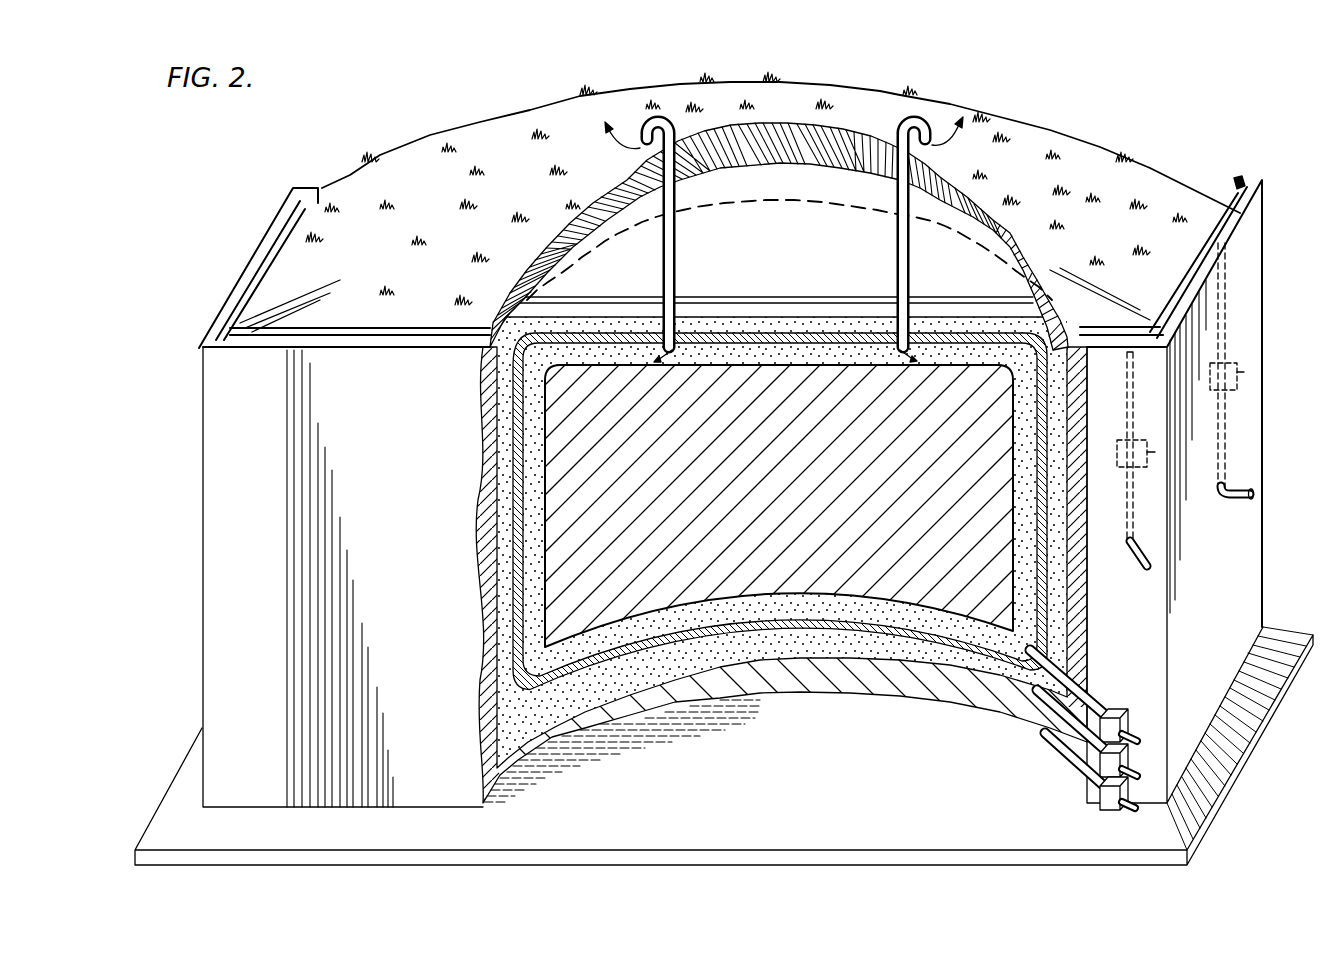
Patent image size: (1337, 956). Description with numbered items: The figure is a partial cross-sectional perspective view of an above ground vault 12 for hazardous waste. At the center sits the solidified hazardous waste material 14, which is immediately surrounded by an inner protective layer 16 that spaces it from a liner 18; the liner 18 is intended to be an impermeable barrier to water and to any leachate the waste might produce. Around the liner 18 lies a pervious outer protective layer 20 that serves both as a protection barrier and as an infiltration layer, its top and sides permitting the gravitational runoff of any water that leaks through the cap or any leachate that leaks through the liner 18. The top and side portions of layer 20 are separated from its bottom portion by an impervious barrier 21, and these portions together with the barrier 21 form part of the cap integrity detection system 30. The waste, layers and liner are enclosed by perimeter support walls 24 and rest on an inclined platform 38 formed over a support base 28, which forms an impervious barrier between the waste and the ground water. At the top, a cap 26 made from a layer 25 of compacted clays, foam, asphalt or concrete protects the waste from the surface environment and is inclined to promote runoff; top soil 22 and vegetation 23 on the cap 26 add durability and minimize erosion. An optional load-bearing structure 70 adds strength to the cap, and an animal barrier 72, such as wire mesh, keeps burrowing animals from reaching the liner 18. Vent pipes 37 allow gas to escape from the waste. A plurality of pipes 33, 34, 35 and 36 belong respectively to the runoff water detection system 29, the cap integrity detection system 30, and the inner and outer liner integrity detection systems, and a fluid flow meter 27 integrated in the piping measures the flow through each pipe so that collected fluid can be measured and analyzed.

The vault 12 is at (1146, 104).
The hazardous waste material 14 is at (797, 505).
The inner protective layer 16 is at (1027, 520).
The liner 18 is at (1043, 437).
The outer protective layer 20 is at (1053, 594).
The barrier 21 is at (537, 745).
The top soil 22 is at (790, 130).
The vegetation 23 is at (757, 78).
The perimeter support wall 24 is at (228, 598).
The layer 25 is at (752, 246).
The cap 26 is at (1012, 142).
The fluid flow meter 27 is at (1150, 455).
The support base 28 is at (1124, 853).
The runoff water detection system 29 is at (1242, 183).
The cap integrity detection system 30 is at (843, 650).
The water run off pipe 33 is at (1150, 565).
The pipe 34 is at (1075, 775).
The pipe 35 is at (1080, 698).
The leachate run off pipe 36 is at (1067, 722).
The vent pipe 37 is at (670, 118).
The inclined platform 38 is at (763, 670).
The load-bearing structure 70 is at (795, 297).
The animal barrier 72 is at (818, 203).